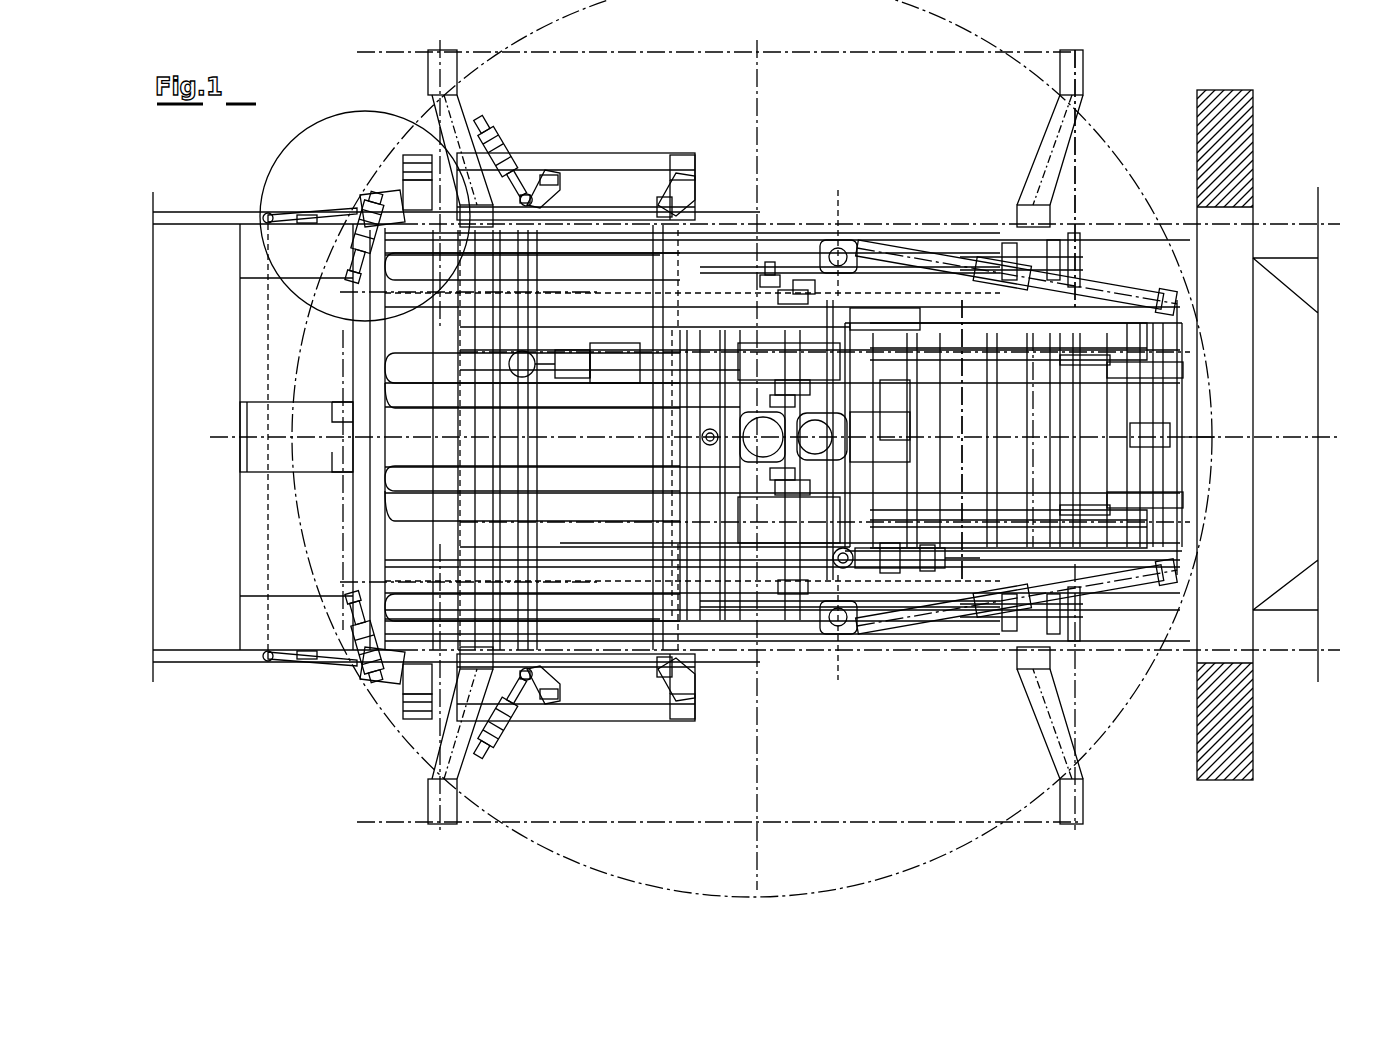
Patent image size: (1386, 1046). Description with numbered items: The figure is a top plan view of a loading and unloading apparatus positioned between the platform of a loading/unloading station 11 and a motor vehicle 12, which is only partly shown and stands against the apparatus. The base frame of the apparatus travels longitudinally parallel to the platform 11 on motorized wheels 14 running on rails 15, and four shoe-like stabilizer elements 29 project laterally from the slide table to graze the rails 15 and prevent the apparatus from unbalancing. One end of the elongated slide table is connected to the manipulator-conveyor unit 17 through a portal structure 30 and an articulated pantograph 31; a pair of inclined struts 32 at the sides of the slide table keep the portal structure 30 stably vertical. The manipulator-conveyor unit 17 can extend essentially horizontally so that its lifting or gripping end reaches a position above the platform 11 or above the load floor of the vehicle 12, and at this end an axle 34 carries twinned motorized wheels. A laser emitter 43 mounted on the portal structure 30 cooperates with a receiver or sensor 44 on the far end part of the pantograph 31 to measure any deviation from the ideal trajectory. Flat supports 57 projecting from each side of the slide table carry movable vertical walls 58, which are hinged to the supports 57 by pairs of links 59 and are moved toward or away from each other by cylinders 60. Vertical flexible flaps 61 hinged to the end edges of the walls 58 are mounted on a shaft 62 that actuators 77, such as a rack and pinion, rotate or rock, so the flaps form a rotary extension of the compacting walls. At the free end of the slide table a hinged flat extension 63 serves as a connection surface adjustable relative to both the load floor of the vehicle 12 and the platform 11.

The loading/unloading station platform 11 is at (1243, 136).
The motor vehicle 12 is at (188, 228).
The motorized wheels 14 is at (1082, 243).
The rails 15 is at (1080, 168).
The manipulator-conveyor unit 17 is at (770, 275).
The stabilizer elements 29 is at (438, 105).
The portal structure 30 is at (1175, 400).
The articulated pantograph 31 is at (965, 300).
The inclined struts 32 is at (1132, 297).
The axle 34 is at (800, 282).
The laser emitter 43 is at (1200, 437).
The receiver or sensor 44 is at (910, 400).
The flat supports 57 is at (620, 175).
The movable vertical walls 58 is at (640, 210).
The links 59 is at (548, 183).
The cylinders 60 is at (495, 140).
The vertical flexible flaps 61 is at (312, 216).
The shaft 62 is at (372, 200).
The flat extension 63 is at (252, 552).
The actuators 77 is at (362, 648).